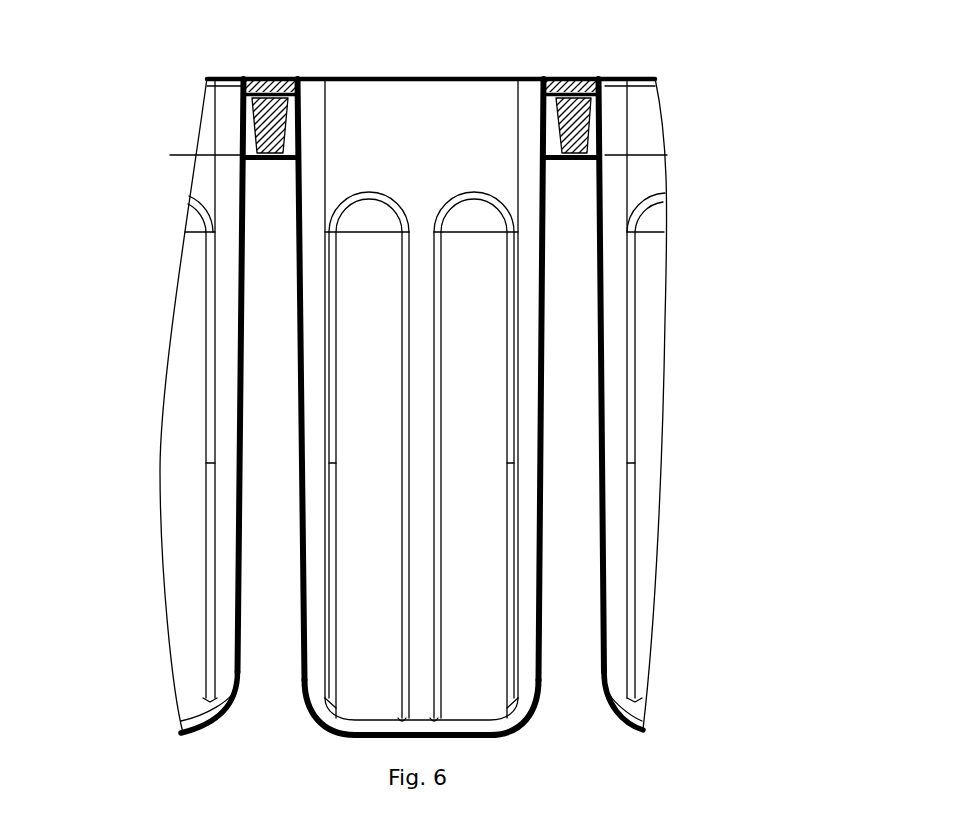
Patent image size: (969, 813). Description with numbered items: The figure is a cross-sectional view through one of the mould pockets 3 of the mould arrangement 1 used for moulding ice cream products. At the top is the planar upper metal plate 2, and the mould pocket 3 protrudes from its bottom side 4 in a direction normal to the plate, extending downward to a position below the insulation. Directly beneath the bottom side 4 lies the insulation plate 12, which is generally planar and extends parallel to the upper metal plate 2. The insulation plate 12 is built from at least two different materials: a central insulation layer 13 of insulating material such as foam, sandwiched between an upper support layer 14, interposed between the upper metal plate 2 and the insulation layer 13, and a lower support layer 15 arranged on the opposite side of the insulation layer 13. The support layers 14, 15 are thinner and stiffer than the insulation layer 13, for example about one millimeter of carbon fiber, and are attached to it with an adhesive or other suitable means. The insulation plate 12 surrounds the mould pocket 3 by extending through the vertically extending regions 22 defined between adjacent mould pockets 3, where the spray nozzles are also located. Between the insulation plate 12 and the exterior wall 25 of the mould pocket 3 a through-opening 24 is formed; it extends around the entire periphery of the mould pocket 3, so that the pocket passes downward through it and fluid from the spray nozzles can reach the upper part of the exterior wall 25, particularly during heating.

The mould arrangement 1 is at (172, 76).
The upper metal plate 2 is at (262, 77).
The mould pocket 3 is at (360, 282).
The bottom side 4 is at (648, 99).
The insulation plate 12 is at (252, 122).
The insulation layer 13 is at (250, 163).
The upper support layer 14 is at (262, 89).
The lower support layer 15 is at (252, 177).
The vertically extending region 22 is at (256, 418).
The through-opening 24 is at (602, 148).
The exterior wall 25 is at (548, 122).